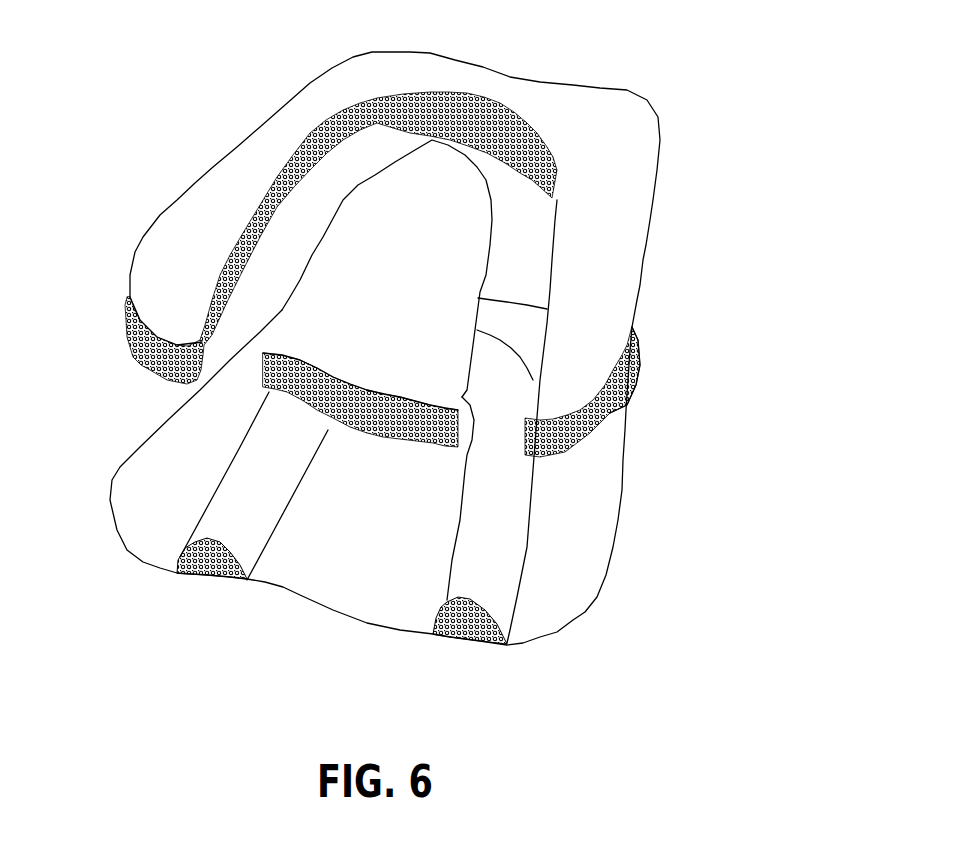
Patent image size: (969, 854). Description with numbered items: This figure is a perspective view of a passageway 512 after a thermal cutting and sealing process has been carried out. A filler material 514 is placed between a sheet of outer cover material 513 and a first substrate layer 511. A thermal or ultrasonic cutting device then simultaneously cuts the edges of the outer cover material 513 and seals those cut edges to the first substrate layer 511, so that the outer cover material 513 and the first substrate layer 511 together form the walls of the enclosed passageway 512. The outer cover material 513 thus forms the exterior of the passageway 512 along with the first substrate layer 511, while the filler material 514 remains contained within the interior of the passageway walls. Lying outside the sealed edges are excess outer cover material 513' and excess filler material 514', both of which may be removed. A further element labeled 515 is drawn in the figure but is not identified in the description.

The first substrate layer 511 is at (568, 630).
The passageway 512 is at (496, 316).
The outer cover material 513 is at (539, 345).
The excess outer cover material 513' is at (387, 208).
The filler material 514 is at (323, 591).
The excess filler material 514' is at (388, 296).
The tubular channel 515 is at (273, 517).